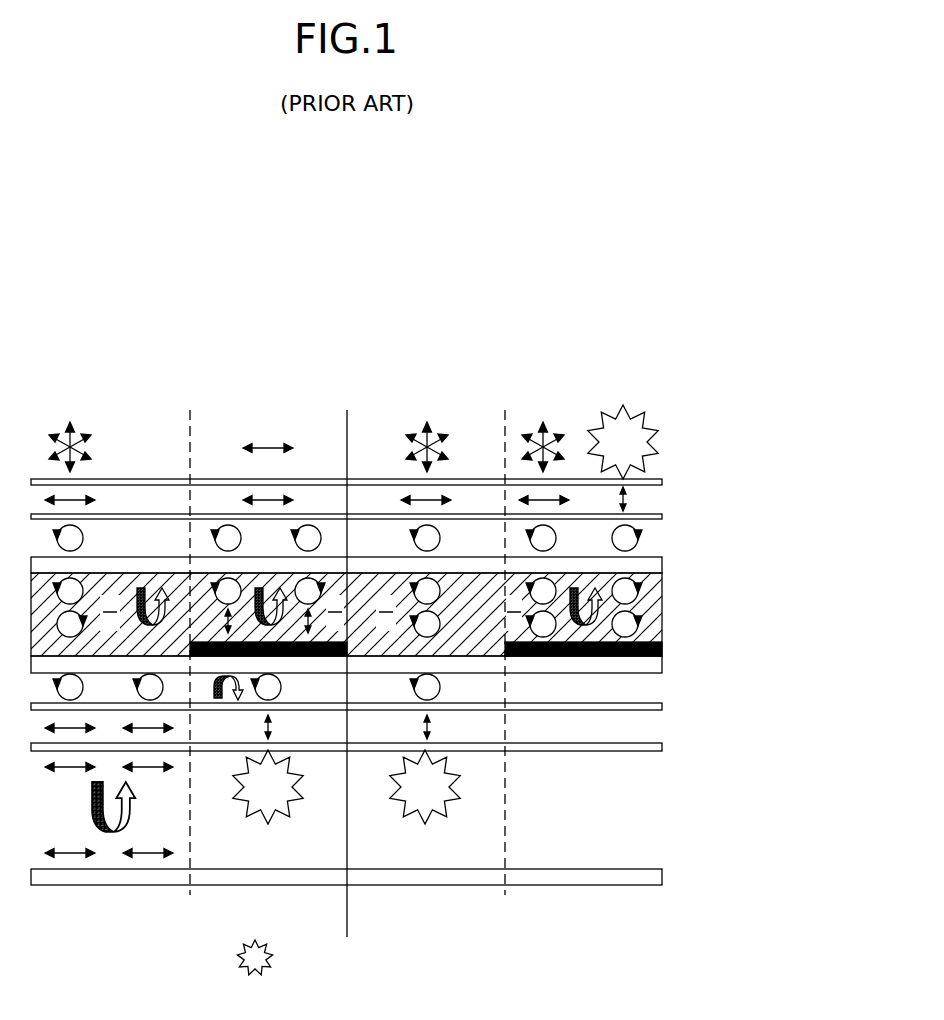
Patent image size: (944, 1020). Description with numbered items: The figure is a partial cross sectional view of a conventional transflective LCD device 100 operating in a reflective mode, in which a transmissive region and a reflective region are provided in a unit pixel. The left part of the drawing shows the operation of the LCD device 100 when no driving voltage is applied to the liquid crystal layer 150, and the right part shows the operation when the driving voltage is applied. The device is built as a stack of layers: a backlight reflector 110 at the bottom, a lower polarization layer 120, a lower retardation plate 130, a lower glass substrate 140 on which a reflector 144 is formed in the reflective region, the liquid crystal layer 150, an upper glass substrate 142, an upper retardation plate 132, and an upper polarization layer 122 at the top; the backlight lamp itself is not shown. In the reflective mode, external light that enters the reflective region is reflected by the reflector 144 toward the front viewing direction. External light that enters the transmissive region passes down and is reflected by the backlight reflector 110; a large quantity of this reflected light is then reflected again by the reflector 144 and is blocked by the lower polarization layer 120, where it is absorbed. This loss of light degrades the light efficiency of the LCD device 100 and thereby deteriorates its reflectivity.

The transflective LCD device 100 is at (730, 263).
The backlight reflector 110 is at (663, 877).
The lower polarization layer 120 is at (663, 747).
The lower retardation plate 130 is at (663, 706).
The lower glass substrate 140 is at (663, 665).
The reflector 144 is at (663, 650).
The liquid crystal layer 150 is at (651, 598).
The upper glass substrate 142 is at (663, 565).
The upper retardation plate 132 is at (663, 517).
The upper polarization layer 122 is at (663, 482).